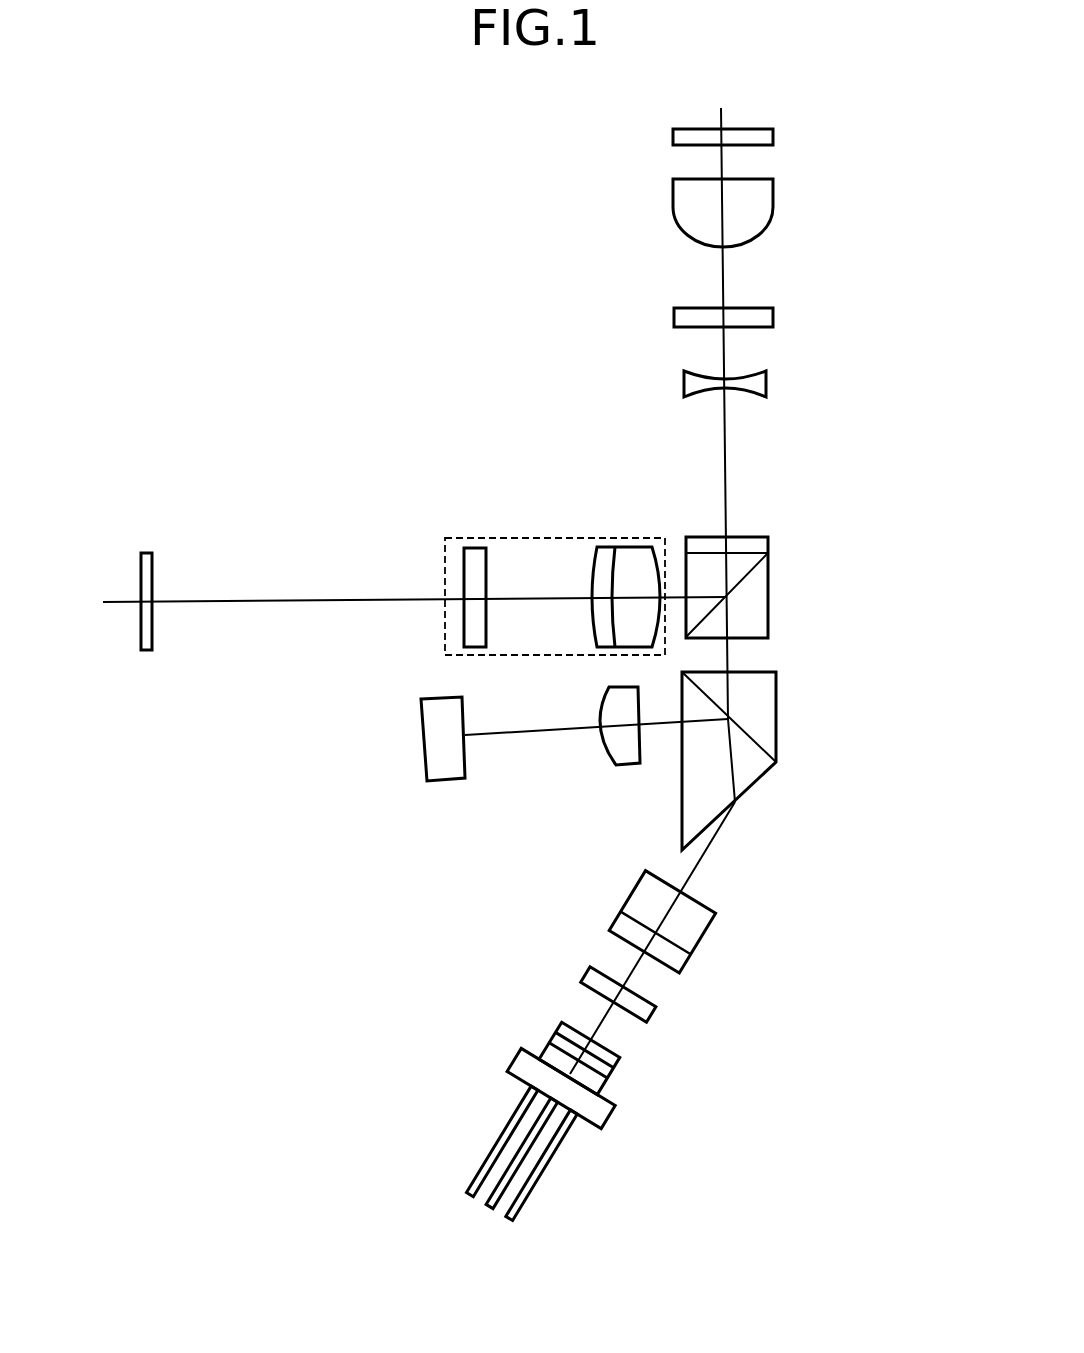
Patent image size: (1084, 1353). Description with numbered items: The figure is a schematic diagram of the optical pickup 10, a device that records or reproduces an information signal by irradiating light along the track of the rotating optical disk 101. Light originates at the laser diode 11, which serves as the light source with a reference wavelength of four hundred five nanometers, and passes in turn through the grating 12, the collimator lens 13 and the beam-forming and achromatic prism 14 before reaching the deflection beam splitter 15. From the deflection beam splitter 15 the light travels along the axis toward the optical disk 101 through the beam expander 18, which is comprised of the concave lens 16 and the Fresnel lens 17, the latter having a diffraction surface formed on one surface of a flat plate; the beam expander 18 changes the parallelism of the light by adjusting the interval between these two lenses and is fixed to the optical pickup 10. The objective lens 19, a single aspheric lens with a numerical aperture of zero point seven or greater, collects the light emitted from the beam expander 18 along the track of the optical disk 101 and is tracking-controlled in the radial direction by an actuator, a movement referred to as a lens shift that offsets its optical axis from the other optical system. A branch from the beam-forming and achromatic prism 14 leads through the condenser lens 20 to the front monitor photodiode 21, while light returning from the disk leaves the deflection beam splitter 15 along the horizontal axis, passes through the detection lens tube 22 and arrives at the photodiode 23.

The optical pickup 10 is at (308, 246).
The laser diode 11 is at (605, 1125).
The grating 12 is at (657, 1009).
The collimator lens 13 is at (698, 943).
The beam-forming and achromatic prism 14 is at (776, 730).
The deflection beam splitter 15 is at (769, 595).
The concave lens 16 is at (767, 377).
The Fresnel lens 17 is at (773, 313).
The beam expander 18 is at (877, 289).
The objective lens 19 is at (773, 196).
The condenser lens 20 is at (622, 767).
The front monitor photodiode 21 is at (421, 745).
The detection lens tube 22 is at (577, 538).
The photodiode 23 is at (147, 553).
The optical disk 101 is at (773, 133).